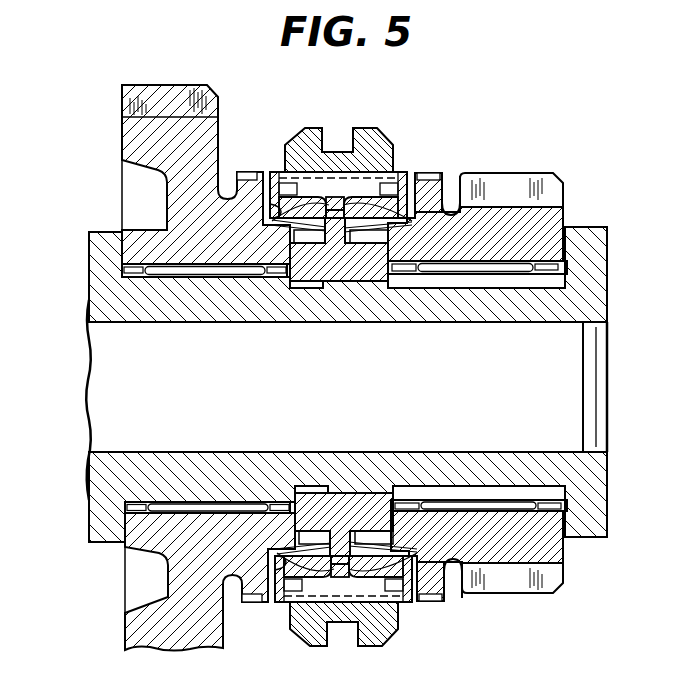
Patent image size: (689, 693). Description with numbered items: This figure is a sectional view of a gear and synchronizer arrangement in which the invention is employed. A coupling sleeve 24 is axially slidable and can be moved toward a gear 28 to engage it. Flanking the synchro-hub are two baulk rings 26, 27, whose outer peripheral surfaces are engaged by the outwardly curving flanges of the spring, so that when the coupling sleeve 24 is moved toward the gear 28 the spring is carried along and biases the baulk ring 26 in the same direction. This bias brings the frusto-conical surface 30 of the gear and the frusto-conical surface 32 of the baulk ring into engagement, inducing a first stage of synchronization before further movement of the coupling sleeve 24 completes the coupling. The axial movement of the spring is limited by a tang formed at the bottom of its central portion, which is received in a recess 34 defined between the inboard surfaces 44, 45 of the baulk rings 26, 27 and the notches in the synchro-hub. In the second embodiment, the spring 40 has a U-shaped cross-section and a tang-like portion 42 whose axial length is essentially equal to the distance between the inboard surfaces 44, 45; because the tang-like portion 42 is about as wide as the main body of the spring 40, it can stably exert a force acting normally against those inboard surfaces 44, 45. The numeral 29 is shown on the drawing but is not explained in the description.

The coupling sleeve 24 is at (377, 146).
The baulk ring 26 is at (275, 172).
The baulk ring 27 is at (433, 190).
The gear 28 is at (135, 135).
The ring 29 is at (540, 223).
The frusto-conical surface of the gear 30 is at (290, 207).
The frusto-conical surface of the baulk ring 32 is at (290, 238).
The recess 34 is at (340, 215).
The spring 40 is at (308, 187).
The tang-like portion 42 is at (340, 200).
The inboard surface of the baulk ring 44 is at (205, 236).
The inboard surface of the baulk ring 45 is at (400, 233).